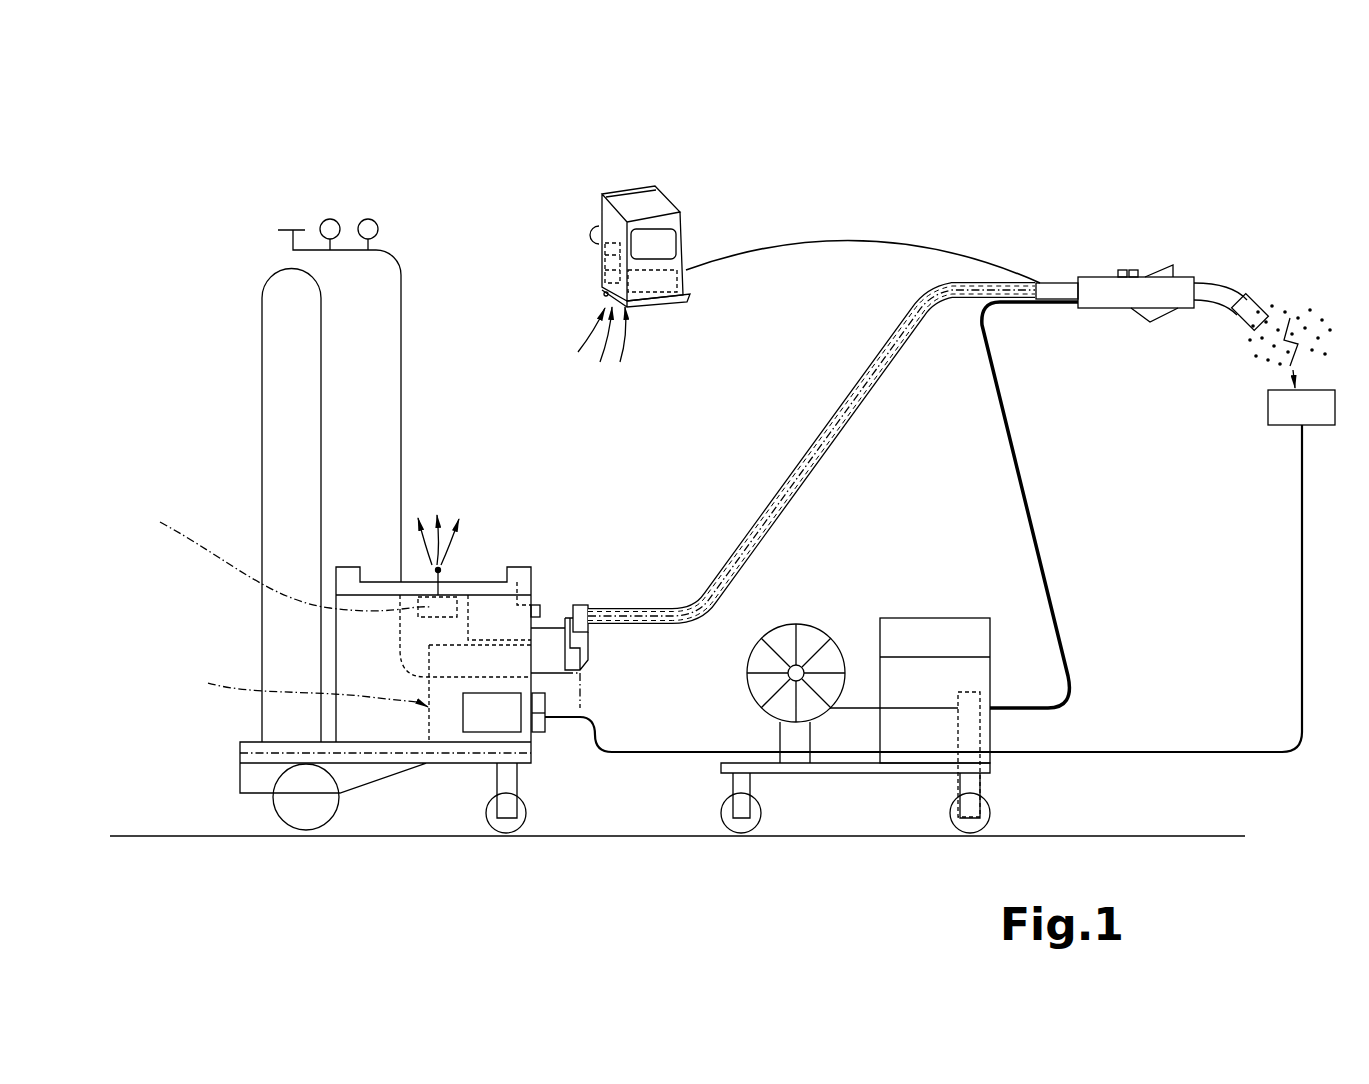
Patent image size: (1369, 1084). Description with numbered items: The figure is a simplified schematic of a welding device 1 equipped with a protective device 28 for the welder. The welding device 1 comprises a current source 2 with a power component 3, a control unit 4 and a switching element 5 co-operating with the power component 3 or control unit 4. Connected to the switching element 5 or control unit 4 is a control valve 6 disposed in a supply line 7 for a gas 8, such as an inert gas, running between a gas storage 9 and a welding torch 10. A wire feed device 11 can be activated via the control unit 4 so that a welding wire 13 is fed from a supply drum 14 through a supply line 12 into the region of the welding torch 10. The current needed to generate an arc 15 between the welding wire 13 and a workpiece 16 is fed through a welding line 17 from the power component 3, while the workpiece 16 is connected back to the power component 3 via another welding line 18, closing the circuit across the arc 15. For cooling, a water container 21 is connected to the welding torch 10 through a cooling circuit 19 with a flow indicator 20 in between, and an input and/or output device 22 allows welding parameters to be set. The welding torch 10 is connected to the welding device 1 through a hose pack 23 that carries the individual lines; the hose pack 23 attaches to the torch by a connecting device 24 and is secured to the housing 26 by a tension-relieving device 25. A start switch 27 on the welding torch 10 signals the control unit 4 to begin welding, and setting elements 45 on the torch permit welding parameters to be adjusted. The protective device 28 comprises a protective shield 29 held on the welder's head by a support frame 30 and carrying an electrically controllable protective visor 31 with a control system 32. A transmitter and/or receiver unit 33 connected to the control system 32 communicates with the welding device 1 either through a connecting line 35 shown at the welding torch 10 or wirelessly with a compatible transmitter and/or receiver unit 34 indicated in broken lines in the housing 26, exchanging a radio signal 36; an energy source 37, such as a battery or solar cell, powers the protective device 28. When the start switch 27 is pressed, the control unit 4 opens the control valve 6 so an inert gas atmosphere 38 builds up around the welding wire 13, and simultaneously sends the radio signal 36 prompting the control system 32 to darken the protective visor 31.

The welding device 1 is at (192, 215).
The current source 2 is at (480, 448).
The power component 3 is at (483, 720).
The control unit 4 is at (308, 683).
The switching element 5 is at (543, 745).
The control valve 6 is at (542, 687).
The supply line 7 is at (962, 298).
The gas 8 is at (1272, 288).
The gas storage 9 is at (291, 350).
The welding torch 10 is at (1185, 245).
The wire feed device 11 is at (1042, 798).
The supply line 12 is at (1036, 530).
The welding wire 13 is at (1290, 318).
The supply drum 14 is at (798, 640).
The arc 15 is at (1268, 376).
The workpiece 16 is at (1313, 405).
The welding line 17 is at (893, 345).
The welding line 18 is at (1302, 612).
The cooling circuit 19 is at (747, 540).
The flow indicator 20 is at (543, 603).
The water container 21 is at (491, 590).
The input and/or output device 22 is at (523, 597).
The hose pack 23 is at (641, 610).
The connecting device 24 is at (1055, 290).
The tension-relieving device 25 is at (581, 606).
The housing 26 is at (582, 642).
The start switch 27 is at (1147, 318).
The protective device 28 is at (620, 160).
The protective shield 29 is at (652, 202).
The support frame 30 is at (593, 228).
The protective visor 31 is at (657, 245).
The control system 32 is at (670, 300).
The transmitter and/or receiver unit 33 is at (602, 272).
The transmitter and/or receiver unit 34 is at (280, 556).
The connecting line 35 is at (862, 240).
The radio signal 36 is at (428, 487).
The energy source 37 is at (597, 240).
The inert gas atmosphere 38 is at (1208, 347).
The setting elements 45 is at (1115, 247).